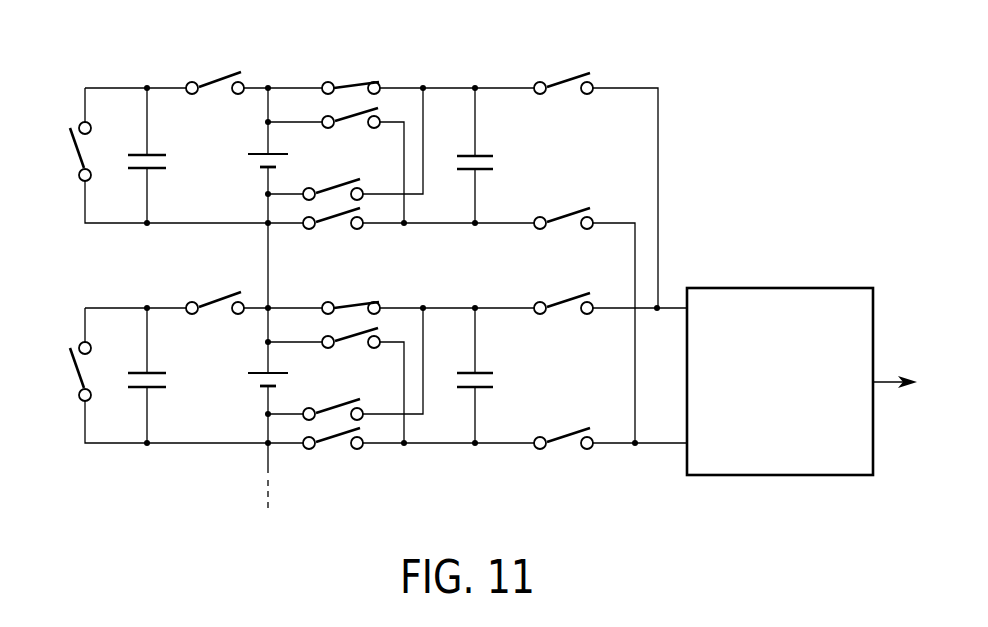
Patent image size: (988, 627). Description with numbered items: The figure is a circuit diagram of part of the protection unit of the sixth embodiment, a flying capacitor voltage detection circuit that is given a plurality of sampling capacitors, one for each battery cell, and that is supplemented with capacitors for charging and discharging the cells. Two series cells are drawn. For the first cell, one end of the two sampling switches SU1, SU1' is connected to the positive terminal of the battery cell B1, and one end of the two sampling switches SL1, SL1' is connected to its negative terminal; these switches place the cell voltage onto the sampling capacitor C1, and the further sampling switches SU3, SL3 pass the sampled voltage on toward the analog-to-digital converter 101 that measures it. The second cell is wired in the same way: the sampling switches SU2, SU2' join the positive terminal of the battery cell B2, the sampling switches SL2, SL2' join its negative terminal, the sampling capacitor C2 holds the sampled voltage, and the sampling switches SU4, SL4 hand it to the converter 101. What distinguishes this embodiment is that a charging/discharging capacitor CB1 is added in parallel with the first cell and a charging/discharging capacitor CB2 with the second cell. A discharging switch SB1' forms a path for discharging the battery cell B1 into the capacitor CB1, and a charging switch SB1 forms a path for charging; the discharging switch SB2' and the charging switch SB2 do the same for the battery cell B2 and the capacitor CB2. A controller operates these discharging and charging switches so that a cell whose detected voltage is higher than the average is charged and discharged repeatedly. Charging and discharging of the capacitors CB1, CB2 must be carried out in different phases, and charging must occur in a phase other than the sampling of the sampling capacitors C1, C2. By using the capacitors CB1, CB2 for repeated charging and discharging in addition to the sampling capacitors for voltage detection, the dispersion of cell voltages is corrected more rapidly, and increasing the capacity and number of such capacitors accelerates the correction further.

The ADC (analog-to-digital converter) 101 is at (780, 287).
The charging switch SB1 is at (213, 71).
The discharging switch SB1' is at (61, 151).
The charging/discharging capacitor CB1 is at (168, 155).
The battery cell B1 is at (256, 159).
The sampling switch SU1 is at (355, 72).
The sampling switch SU1' is at (356, 133).
The sampling switch SL1 is at (325, 234).
The sampling switch SL1' is at (325, 178).
The sampling capacitor C1 is at (494, 155).
The sampling switch SU3 is at (575, 72).
The sampling switch SL3 is at (554, 234).
The charging switch SB2 is at (213, 291).
The discharging switch SB2' is at (59, 371).
The charging/discharging capacitor CB2 is at (168, 375).
The battery cell B2 is at (255, 378).
The sampling switch SU2 is at (355, 292).
The sampling switch SU2' is at (356, 353).
The sampling switch SL2 is at (325, 454).
The sampling switch SL2' is at (325, 398).
The sampling capacitor C2 is at (494, 375).
The sampling switch SU4 is at (575, 292).
The sampling switch SL4 is at (554, 454).